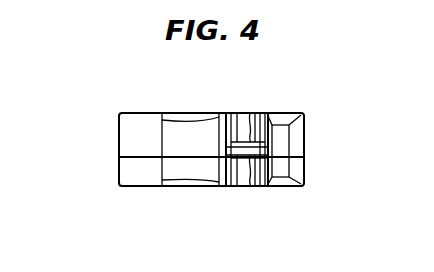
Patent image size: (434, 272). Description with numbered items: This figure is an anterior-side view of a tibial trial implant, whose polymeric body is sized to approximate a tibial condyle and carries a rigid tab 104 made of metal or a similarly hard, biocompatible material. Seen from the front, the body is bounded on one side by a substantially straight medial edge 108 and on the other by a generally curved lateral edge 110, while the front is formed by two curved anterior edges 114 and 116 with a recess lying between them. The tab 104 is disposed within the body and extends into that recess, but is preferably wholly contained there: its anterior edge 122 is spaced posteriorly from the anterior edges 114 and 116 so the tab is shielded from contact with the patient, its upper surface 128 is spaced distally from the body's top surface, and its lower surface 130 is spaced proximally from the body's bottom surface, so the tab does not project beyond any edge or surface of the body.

The tab 104 is at (233, 113).
The medial edge 108 is at (304, 166).
The lateral edge 110 is at (119, 148).
The anterior edge 114 is at (290, 141).
The anterior edge 116 is at (190, 142).
The anterior edge of tab 122 is at (240, 186).
The upper surface of tab 128 is at (260, 113).
The lower surface of tab 130 is at (254, 186).